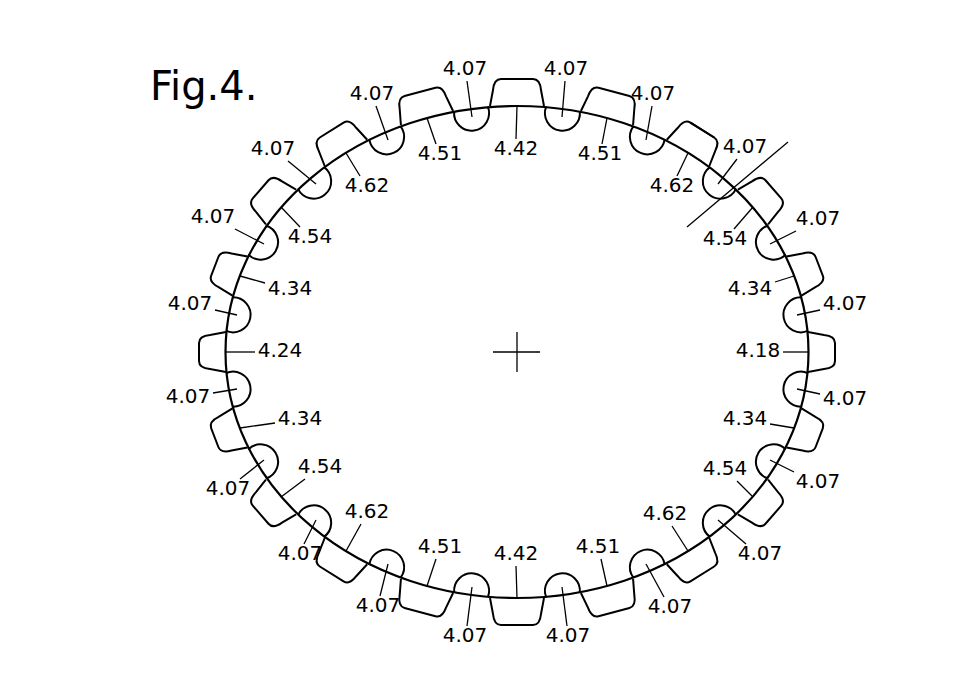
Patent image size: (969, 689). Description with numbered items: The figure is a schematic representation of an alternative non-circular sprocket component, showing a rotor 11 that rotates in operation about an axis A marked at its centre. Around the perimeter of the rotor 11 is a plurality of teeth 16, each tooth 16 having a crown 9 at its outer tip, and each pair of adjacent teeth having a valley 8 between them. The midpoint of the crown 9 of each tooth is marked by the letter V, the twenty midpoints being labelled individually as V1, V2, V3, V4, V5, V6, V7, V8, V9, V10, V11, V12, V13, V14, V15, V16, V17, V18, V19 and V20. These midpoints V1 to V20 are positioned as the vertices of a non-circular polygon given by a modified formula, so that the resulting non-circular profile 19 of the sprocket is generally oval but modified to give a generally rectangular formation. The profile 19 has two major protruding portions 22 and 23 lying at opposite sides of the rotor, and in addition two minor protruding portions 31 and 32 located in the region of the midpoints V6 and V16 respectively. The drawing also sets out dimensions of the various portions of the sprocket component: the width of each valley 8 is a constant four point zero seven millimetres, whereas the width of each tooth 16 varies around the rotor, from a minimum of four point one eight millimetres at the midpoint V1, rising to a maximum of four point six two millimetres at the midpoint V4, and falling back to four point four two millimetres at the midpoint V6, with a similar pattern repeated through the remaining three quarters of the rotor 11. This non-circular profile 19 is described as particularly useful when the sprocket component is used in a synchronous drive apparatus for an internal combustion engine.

The midpoint of crown V1 is at (836, 352).
The midpoint of crown V2 is at (819, 266).
The midpoint of crown V3 is at (773, 190).
The midpoint of crown V4 is at (702, 130).
The midpoint of crown V5 is at (614, 92).
The midpoint of crown V6 is at (517, 79).
The midpoint of crown V7 is at (420, 92).
The midpoint of crown V8 is at (332, 130).
The midpoint of crown V9 is at (261, 190).
The midpoint of crown V10 is at (215, 266).
The midpoint of crown V11 is at (198, 352).
The midpoint of crown V12 is at (215, 438).
The midpoint of crown V13 is at (261, 514).
The midpoint of crown V14 is at (332, 574).
The midpoint of crown V15 is at (420, 612).
The midpoint of crown V16 is at (517, 625).
The midpoint of crown V17 is at (614, 612).
The midpoint of crown V18 is at (702, 574).
The midpoint of crown V19 is at (773, 514).
The midpoint of crown V20 is at (819, 438).
The valley 8 is at (712, 160).
The crown 9 is at (689, 124).
The rotor 11 is at (746, 169).
The tooth 16 is at (614, 119).
The non-circular profile 19 is at (801, 574).
The protruding portion 22 is at (877, 215).
The protruding portion 23 is at (151, 383).
The minor protruding portion 31 is at (554, 34).
The minor protruding portion 32 is at (564, 665).
The axis A is at (516, 347).